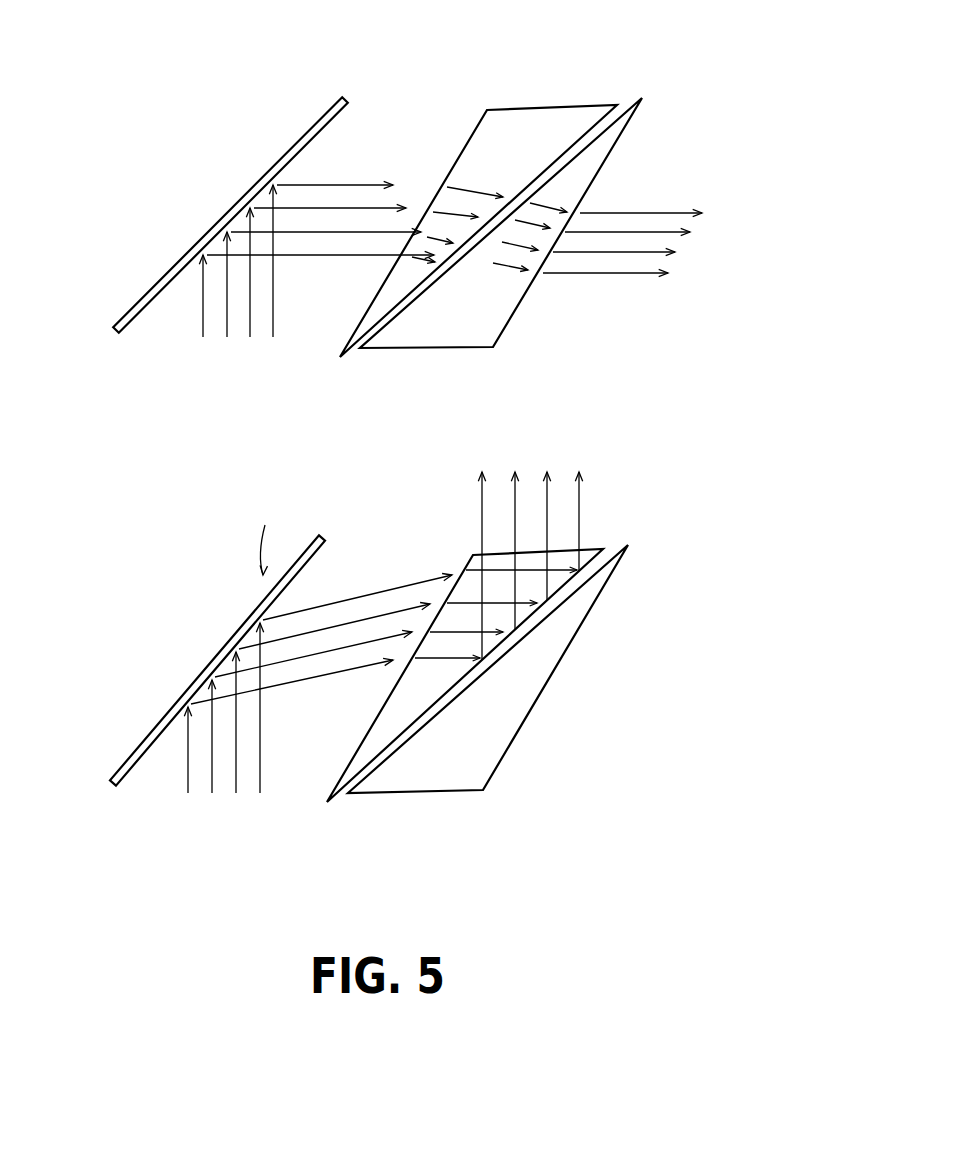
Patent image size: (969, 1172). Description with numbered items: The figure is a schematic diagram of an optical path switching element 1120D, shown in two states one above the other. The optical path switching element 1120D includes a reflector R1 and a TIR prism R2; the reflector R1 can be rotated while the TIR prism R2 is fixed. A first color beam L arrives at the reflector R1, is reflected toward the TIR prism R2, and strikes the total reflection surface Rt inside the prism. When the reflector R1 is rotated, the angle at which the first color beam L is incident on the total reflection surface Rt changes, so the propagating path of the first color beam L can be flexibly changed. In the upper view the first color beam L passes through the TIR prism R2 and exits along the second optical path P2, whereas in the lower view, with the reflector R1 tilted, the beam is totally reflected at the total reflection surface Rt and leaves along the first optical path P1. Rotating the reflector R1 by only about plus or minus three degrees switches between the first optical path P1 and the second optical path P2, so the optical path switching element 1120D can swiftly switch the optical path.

The reflector R1 is at (130, 313).
The TIR prism R2 is at (621, 94).
The total reflection surface Rt is at (568, 147).
The first color beam L is at (202, 322).
The first optical path P1 is at (482, 503).
The second optical path P2 is at (607, 277).
The optical path switching element 1120D is at (730, 833).